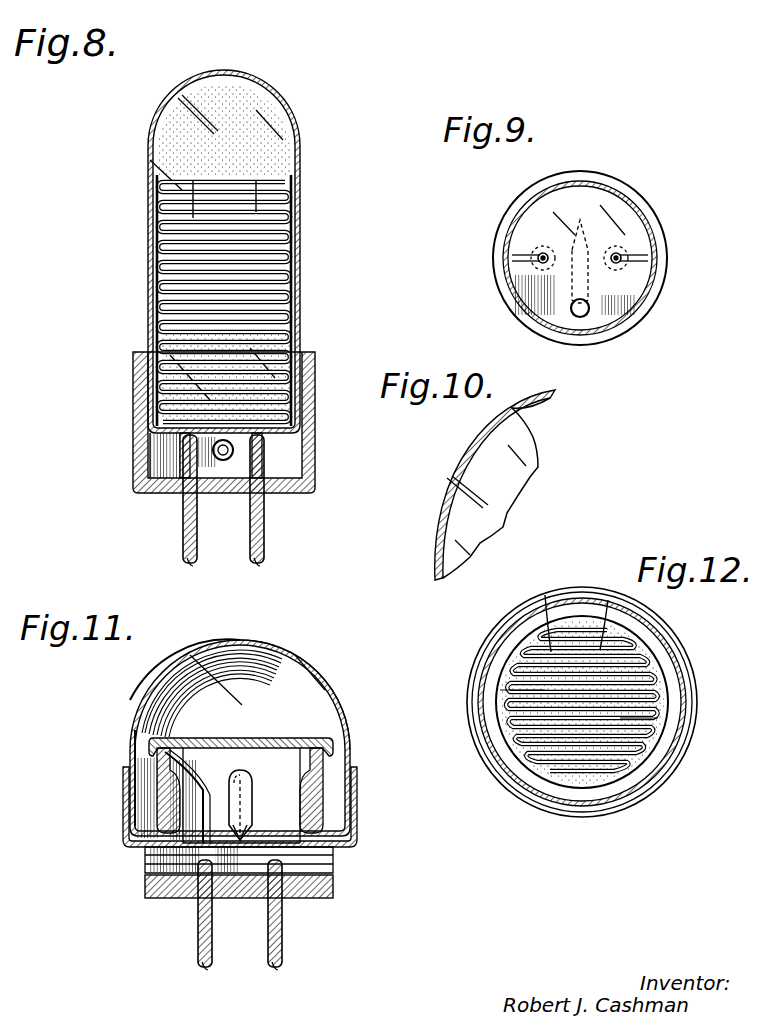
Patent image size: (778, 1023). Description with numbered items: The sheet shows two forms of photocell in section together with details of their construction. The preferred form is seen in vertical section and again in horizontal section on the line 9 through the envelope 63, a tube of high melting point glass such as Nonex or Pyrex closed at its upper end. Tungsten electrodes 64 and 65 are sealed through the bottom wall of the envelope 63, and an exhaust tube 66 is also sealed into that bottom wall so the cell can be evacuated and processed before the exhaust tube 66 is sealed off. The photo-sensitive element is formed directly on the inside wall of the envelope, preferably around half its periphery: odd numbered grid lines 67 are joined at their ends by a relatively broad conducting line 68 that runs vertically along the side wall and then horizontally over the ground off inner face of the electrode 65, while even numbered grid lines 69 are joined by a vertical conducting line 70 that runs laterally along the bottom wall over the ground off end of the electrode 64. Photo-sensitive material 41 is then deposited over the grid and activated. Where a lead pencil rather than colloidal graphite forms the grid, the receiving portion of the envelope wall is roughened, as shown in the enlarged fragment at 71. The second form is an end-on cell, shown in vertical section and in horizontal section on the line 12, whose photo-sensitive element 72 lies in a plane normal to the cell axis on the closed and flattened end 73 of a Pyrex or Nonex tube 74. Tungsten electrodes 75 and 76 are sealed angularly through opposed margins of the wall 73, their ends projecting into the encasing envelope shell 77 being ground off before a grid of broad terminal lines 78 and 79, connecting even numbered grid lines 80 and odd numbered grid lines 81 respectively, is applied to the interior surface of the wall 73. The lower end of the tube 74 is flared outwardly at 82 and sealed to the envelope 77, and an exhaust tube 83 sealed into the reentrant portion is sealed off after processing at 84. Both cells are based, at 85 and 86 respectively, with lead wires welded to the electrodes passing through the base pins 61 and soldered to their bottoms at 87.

In FIG. 8, the section line 9- 9 is at (132, 160).
In FIG. 11, the section line 12- 12 is at (123, 727).
In FIG. 8, the photo-sensitive material 41 is at (270, 360).
In FIG. 12, the photo-sensitive material 41 is at (537, 760).
In FIG. 8, the contact pins 61 is at (250, 532).
In FIG. 11, the contact pins 61 is at (267, 936).
In FIG. 8, the envelope 63 is at (302, 258).
In FIG. 9, the envelope 63 is at (648, 228).
In FIG. 10, the envelope 63 is at (476, 431).
In FIG. 8, the tungsten electrode 64 is at (182, 452).
In FIG. 8, the tungsten electrode 65 is at (260, 452).
In FIG. 8, the exhaust tube 66 is at (224, 440).
In FIG. 9, the exhaust tube 66 is at (608, 333).
In FIG. 8, the odd numbered grid lines 67 is at (256, 212).
In FIG. 9, the odd numbered grid lines 67 is at (613, 218).
In FIG. 8, the conducting line 68 is at (301, 234).
In FIG. 9, the conducting line 68 is at (640, 276).
In FIG. 8, the even numbered grid lines 69 is at (195, 218).
In FIG. 8, the conducting line 70 is at (154, 250).
In FIG. 9, the conducting line 70 is at (513, 277).
In FIG. 10, the roughened portion of envelope 71 is at (540, 417).
In FIG. 11, the photo-sensitive element 72 is at (254, 736).
In FIG. 12, the photo-sensitive element 72 is at (590, 800).
In FIG. 11, the closed and flattened end 73 is at (182, 748).
In FIG. 11, the tube 74 is at (330, 806).
In FIG. 11, the tungsten electrode 75 is at (172, 775).
In FIG. 11, the tungsten electrode 76 is at (305, 766).
In FIG. 11, the encasing envelope shell 77 is at (330, 688).
In FIG. 12, the encasing envelope shell 77 is at (688, 666).
In FIG. 11, the broad terminal line 78 is at (142, 712).
In FIG. 12, the broad terminal line 78 is at (503, 690).
In FIG. 11, the broad terminal line 79 is at (323, 737).
In FIG. 12, the broad terminal line 79 is at (657, 718).
In FIG. 11, the even numbered grid lines 80 is at (213, 737).
In FIG. 12, the even numbered grid lines 80 is at (546, 600).
In FIG. 12, the odd numbered grid lines 81 is at (609, 602).
In FIG. 11, the flared lower end 82 is at (345, 850).
In FIG. 11, the exhaust tube 83 is at (242, 782).
In FIG. 11, the sealed off end 84 is at (242, 842).
In FIG. 8, the base 85 is at (316, 477).
In FIG. 9, the base 85 is at (643, 323).
In FIG. 11, the base 86 is at (340, 889).
In FIG. 12, the base 86 is at (688, 757).
In FIG. 8, the solder connection 87 is at (194, 564).
In FIG. 11, the solder connection 87 is at (275, 967).